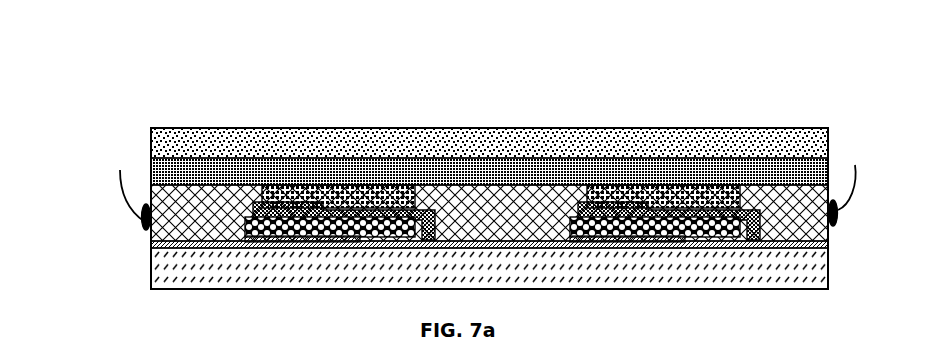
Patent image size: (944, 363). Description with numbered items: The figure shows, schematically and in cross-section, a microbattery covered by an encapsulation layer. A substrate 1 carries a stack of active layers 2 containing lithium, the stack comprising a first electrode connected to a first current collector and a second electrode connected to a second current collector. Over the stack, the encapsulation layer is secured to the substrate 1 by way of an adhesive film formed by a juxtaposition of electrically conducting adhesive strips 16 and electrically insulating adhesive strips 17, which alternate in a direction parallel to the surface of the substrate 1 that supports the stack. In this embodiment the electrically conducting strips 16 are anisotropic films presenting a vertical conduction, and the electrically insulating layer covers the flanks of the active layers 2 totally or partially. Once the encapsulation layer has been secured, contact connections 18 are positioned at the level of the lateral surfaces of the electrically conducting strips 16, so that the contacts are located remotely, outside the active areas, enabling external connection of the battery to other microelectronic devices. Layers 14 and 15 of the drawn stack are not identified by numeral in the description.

The substrate 1 is at (623, 272).
The stack of active layers 2 is at (447, 205).
The cover layer 14 is at (549, 141).
The electrode layer 15 is at (353, 173).
The electrically conducting adhesive strips 16 is at (188, 230).
The electrically insulating adhesive strips 17 is at (328, 190).
The contact connections 18 is at (107, 186).